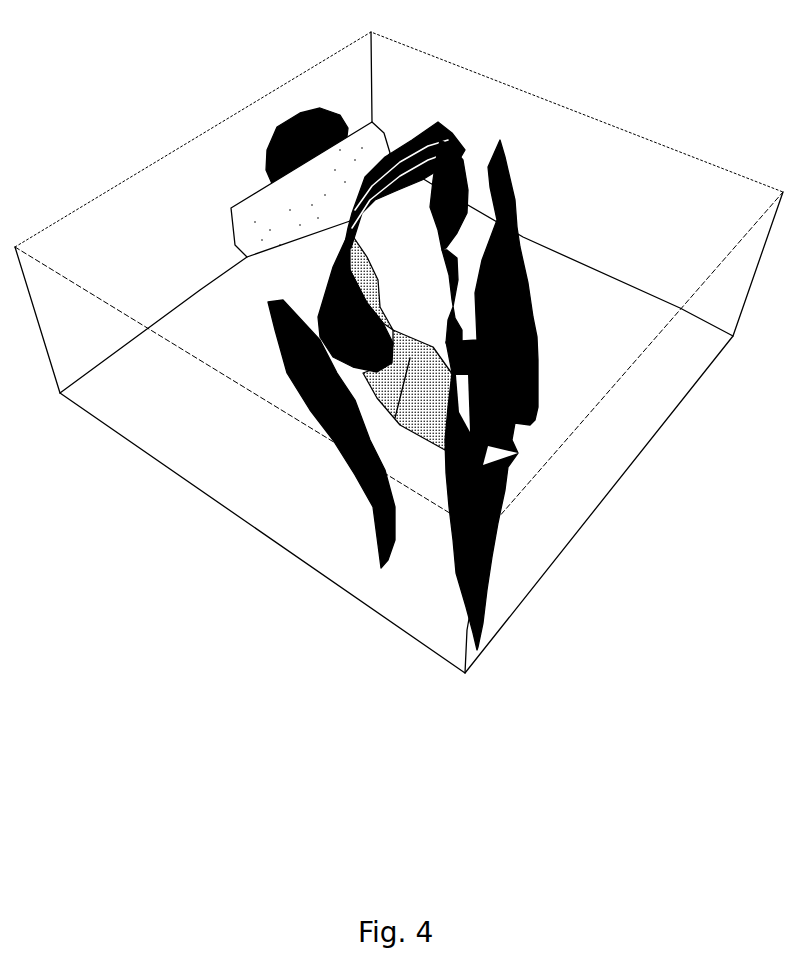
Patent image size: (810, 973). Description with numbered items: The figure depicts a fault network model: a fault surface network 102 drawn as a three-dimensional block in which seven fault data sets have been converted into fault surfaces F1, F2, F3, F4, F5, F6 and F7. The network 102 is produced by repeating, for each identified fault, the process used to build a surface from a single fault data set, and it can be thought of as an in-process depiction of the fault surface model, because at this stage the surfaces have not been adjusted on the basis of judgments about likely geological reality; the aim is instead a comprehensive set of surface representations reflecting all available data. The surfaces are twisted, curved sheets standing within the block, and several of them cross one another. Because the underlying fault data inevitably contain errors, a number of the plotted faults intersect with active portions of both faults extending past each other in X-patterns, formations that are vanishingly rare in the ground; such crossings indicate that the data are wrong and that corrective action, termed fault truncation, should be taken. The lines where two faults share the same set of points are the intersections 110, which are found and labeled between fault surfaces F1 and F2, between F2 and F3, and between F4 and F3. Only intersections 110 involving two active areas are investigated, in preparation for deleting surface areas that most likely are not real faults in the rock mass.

The fault surface network 102 is at (572, 82).
The intersection 110 is at (456, 152).
The fault surface F1 is at (522, 237).
The fault surface F2 is at (447, 247).
The fault surface F3 is at (409, 143).
The fault surface F4 is at (340, 283).
The fault surface F5 is at (266, 349).
The fault surface F6 is at (246, 207).
The fault surface F7 is at (322, 108).